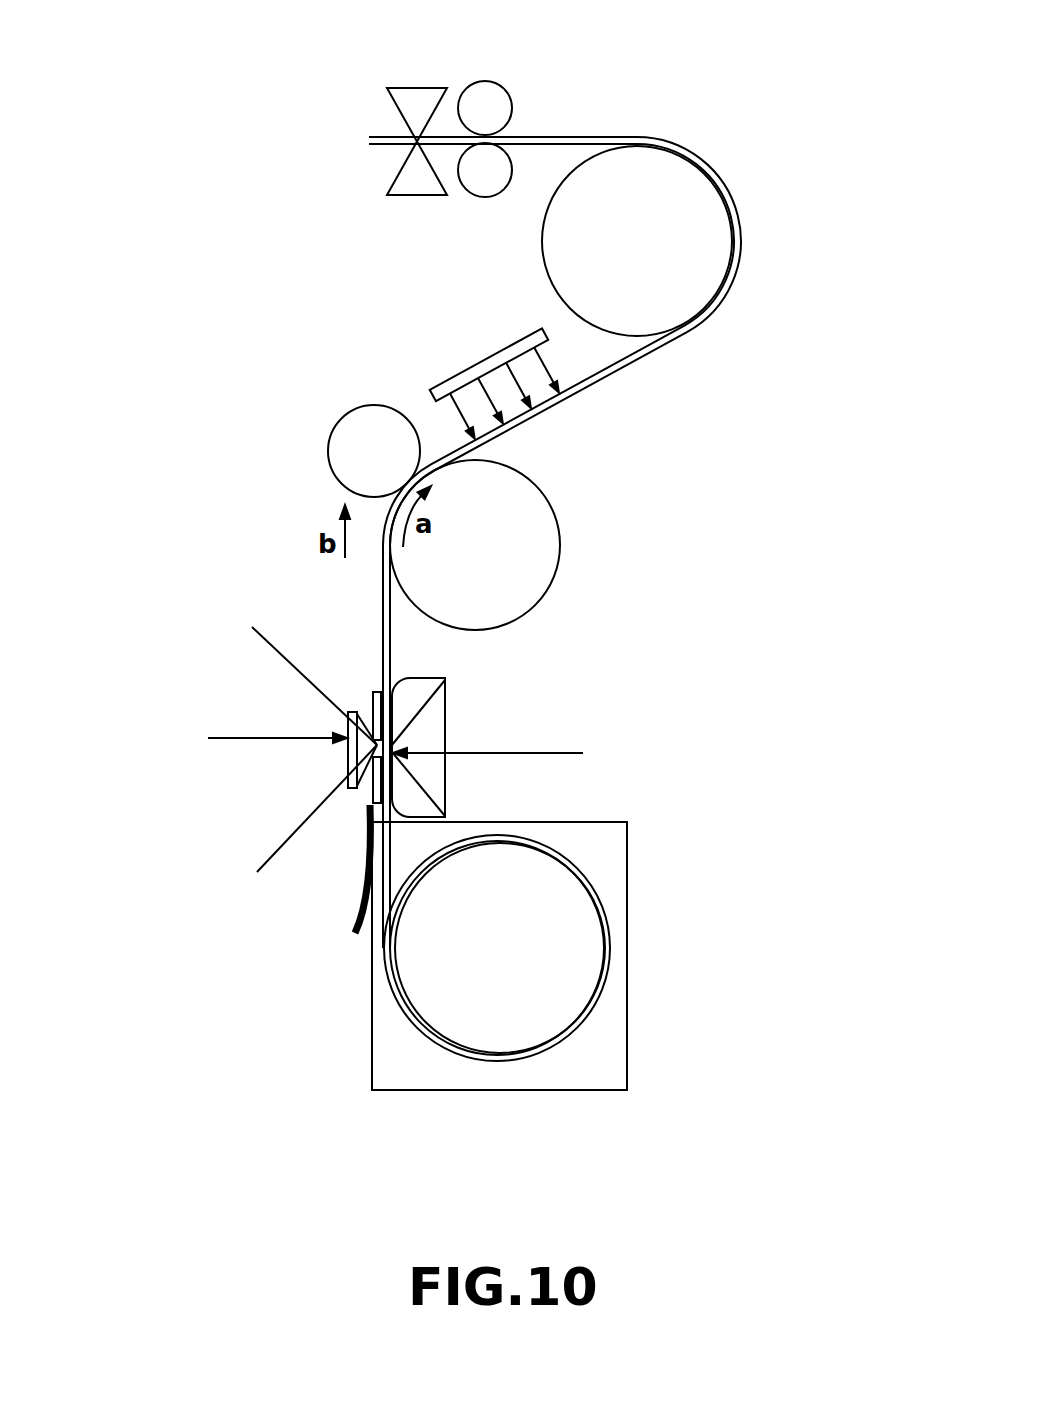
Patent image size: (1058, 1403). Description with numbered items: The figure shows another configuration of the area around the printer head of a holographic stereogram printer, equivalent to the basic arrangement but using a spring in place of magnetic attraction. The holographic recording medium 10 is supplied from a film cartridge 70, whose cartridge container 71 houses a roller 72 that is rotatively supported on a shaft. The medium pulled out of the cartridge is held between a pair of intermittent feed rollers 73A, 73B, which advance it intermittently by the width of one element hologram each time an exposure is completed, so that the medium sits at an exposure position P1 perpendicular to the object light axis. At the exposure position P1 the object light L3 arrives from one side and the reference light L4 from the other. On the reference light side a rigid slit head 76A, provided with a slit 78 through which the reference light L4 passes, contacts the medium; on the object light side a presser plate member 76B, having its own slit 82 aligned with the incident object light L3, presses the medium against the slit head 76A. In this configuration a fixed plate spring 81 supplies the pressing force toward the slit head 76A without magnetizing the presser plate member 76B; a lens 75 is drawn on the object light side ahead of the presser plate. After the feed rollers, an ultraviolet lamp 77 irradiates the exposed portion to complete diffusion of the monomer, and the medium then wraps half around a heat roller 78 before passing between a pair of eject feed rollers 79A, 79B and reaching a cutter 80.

The holographic recording medium 10 is at (378, 588).
The film cartridge 70 is at (565, 954).
The cartridge container 71 is at (627, 913).
The roller 72 is at (463, 1060).
The intermittent feed roller 73A is at (558, 525).
The intermittent feed roller 73B is at (343, 440).
The condenser lens 75 is at (348, 760).
The slit head 76A is at (415, 677).
The presser plate member 76B is at (373, 712).
The ultraviolet lamp 77 is at (448, 372).
The slit 78 is at (542, 240).
The eject feed roller 79A is at (462, 195).
The eject feed roller 79B is at (492, 83).
The cutter 80 is at (419, 88).
The fixed plate spring 81 is at (357, 902).
The slit 82 is at (373, 782).
The object light L3 is at (255, 745).
The reference light L4 is at (507, 754).
The exposure position P1 is at (306, 705).